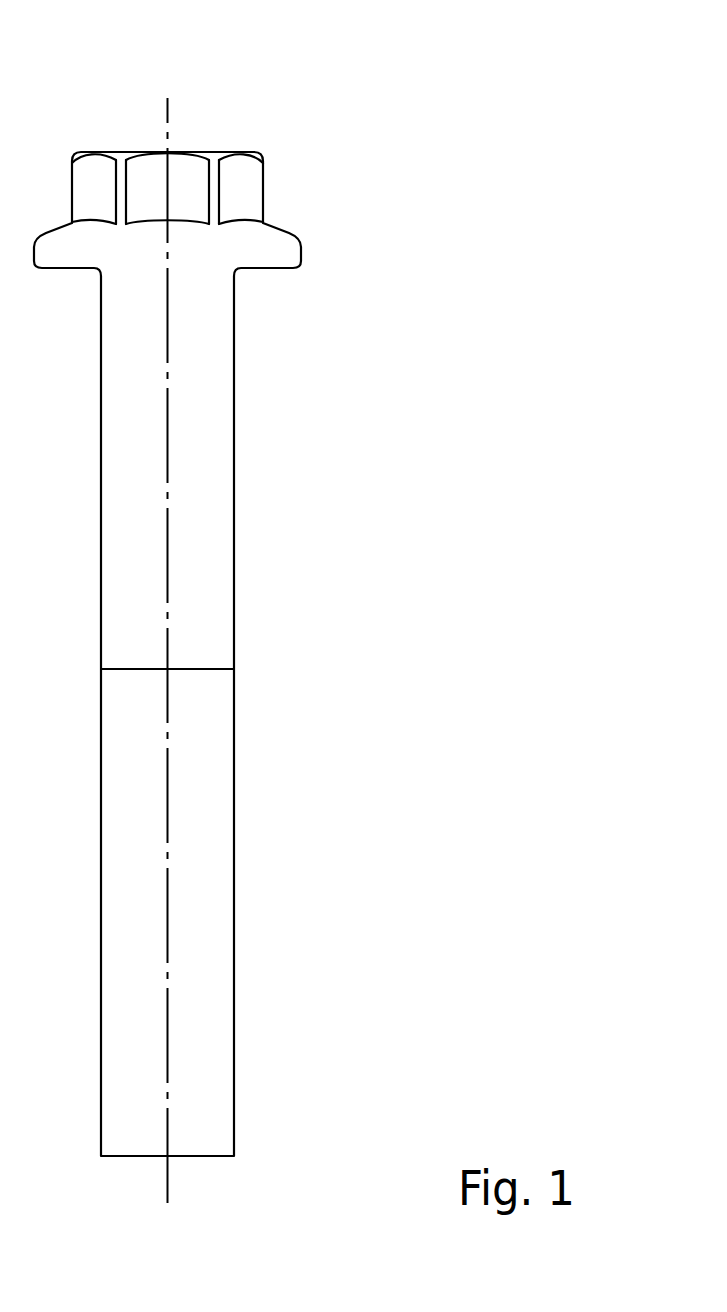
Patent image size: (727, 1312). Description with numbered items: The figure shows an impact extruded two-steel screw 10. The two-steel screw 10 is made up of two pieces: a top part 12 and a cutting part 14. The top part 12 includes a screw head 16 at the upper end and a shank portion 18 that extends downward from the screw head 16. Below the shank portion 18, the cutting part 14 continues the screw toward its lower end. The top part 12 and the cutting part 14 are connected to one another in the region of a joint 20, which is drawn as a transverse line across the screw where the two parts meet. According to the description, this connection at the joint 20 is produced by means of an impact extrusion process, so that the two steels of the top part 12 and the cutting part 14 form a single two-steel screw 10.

The two-steel screw 10 is at (307, 127).
The top part 12 is at (232, 308).
The cutting part 14 is at (202, 862).
The screw head 16 is at (228, 248).
The shank portion 18 is at (191, 523).
The joint 20 is at (212, 668).